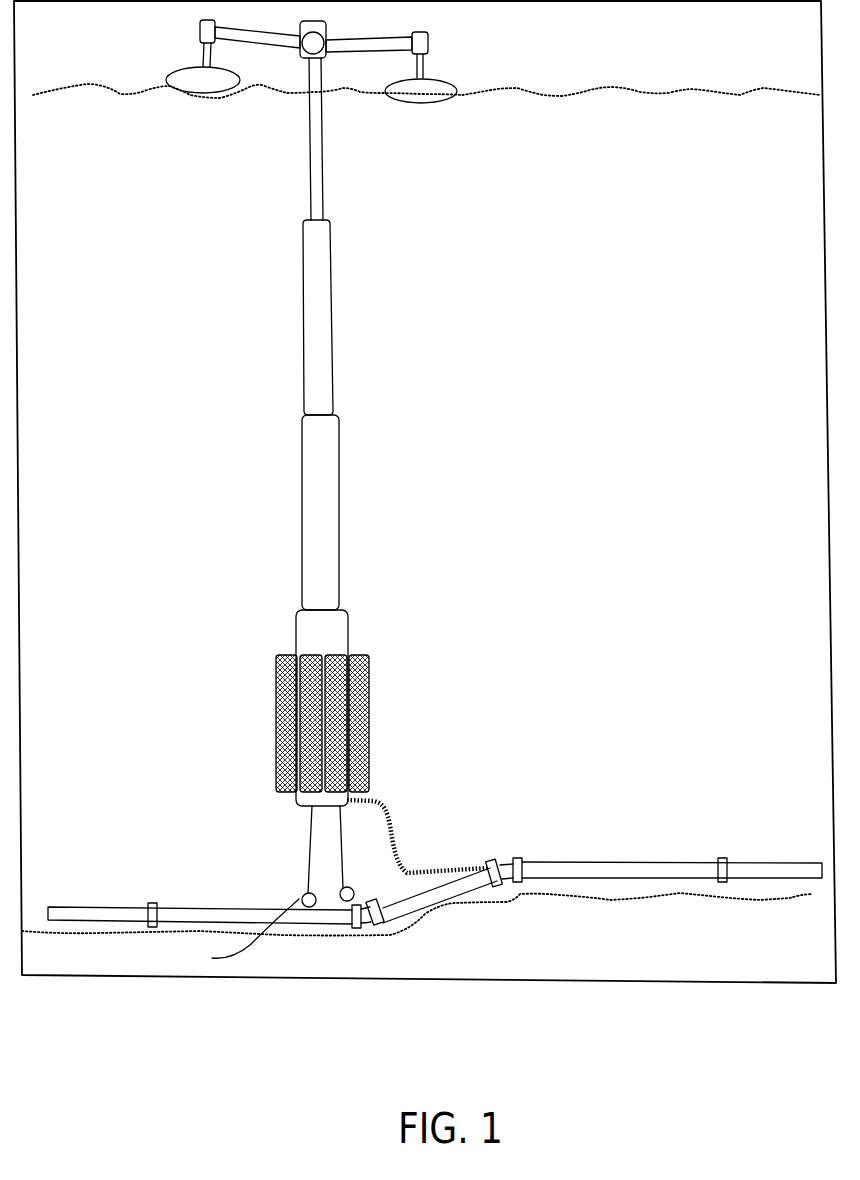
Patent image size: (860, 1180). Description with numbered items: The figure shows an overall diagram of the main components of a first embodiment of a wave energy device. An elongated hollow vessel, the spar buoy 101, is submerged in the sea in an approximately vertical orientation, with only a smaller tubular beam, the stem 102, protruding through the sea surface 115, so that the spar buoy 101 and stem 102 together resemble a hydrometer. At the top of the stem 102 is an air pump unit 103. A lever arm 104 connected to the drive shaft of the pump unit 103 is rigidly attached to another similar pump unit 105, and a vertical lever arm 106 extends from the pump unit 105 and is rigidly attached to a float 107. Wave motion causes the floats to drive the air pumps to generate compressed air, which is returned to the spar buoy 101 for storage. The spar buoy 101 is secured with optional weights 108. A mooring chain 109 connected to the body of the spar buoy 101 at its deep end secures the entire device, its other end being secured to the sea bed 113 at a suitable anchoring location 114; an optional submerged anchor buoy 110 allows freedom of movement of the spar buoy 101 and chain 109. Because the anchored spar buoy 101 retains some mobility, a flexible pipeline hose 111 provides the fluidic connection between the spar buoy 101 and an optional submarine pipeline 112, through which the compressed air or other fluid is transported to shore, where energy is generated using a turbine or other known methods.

The spar buoy 101 is at (298, 513).
The stem 102 is at (308, 141).
The air pump unit 103 is at (322, 58).
The lever arm 104 is at (328, 34).
The pump unit 105 is at (428, 43).
The vertical lever arm 106 is at (423, 67).
The float 107 is at (457, 93).
The weights 108 is at (277, 722).
The mooring chain 109 is at (307, 813).
The submerged anchor buoy 110 is at (293, 897).
The pipeline hose 111 is at (398, 829).
The submarine pipeline 112 is at (619, 862).
The sea bed 113 is at (417, 915).
The anchoring location 114 is at (355, 885).
The sea surface 115 is at (426, 101).